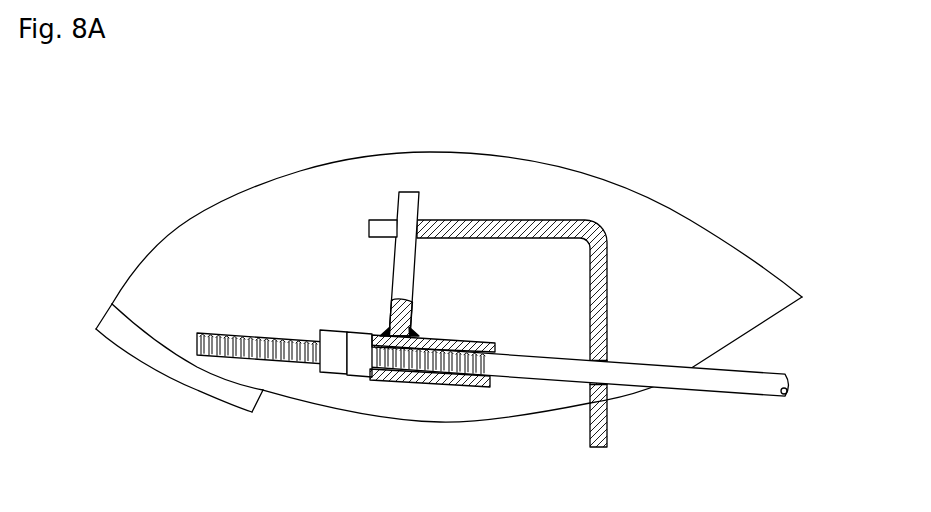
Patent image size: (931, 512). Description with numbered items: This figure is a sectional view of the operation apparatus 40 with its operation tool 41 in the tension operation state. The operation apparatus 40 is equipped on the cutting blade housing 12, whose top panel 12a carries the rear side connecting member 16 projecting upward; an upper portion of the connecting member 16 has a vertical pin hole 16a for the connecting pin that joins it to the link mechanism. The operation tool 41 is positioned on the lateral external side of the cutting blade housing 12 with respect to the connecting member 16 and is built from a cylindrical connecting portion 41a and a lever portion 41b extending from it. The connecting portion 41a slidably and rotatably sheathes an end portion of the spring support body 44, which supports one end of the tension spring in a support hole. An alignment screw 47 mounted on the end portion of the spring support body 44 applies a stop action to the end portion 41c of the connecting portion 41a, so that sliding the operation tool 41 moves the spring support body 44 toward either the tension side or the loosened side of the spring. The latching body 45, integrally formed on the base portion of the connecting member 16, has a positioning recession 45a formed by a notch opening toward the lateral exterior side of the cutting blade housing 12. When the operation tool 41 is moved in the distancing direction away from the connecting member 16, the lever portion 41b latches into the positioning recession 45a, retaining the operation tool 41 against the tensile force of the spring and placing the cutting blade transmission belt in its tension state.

The cutting blade housing 12 is at (449, 316).
The top panel 12a is at (272, 215).
The rear side connecting member 16 is at (606, 298).
The pin hole 16a is at (604, 384).
The operation apparatus 40 is at (493, 309).
The operation tool 41 is at (441, 289).
The connecting portion 41a is at (443, 337).
The lever portion 41b is at (410, 263).
The end portion 41c is at (368, 336).
The spring support body 44 is at (702, 388).
The latching body 45 is at (477, 188).
The positioning recession 45a is at (398, 222).
The alignment screw 47 is at (350, 378).